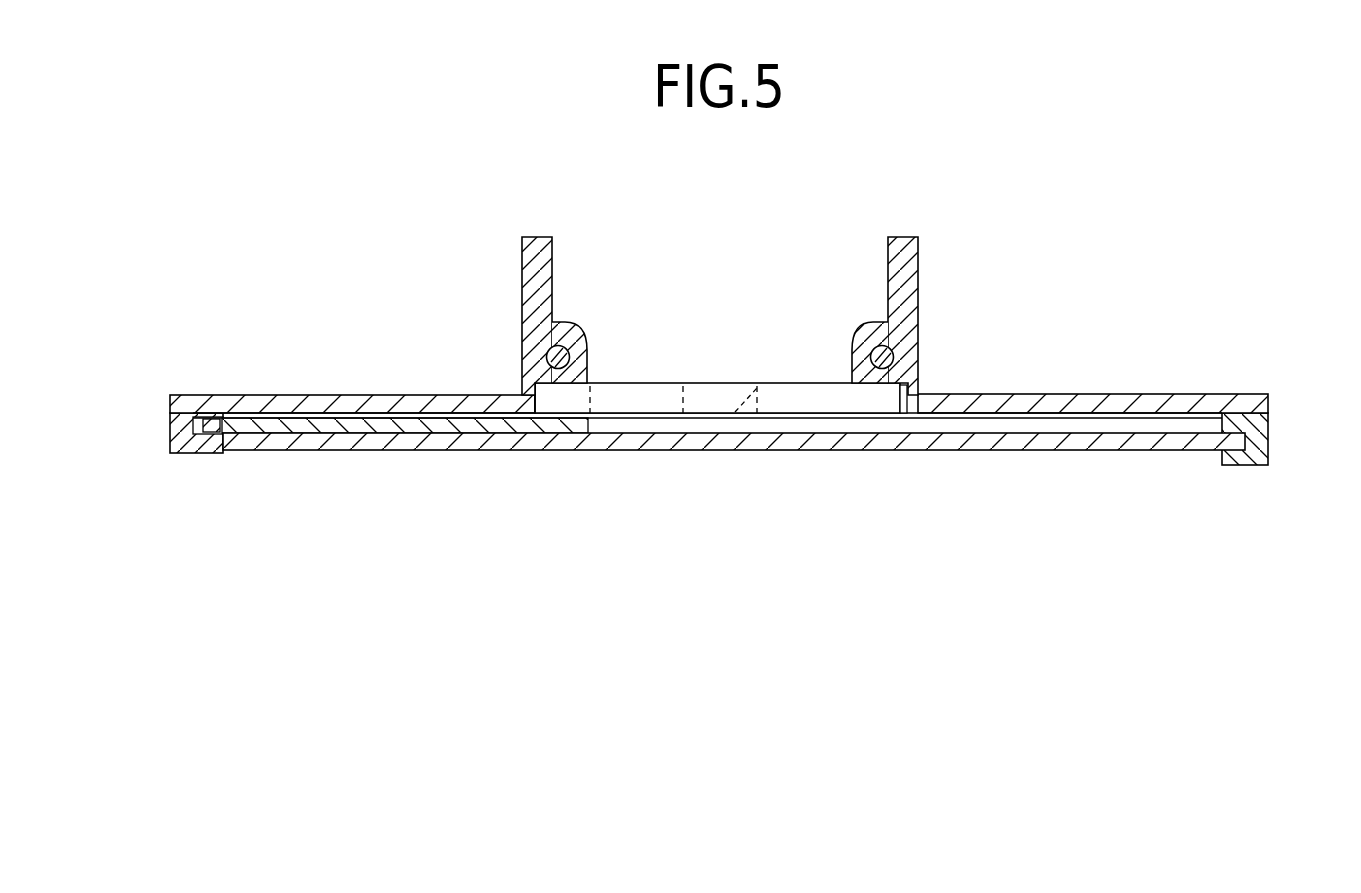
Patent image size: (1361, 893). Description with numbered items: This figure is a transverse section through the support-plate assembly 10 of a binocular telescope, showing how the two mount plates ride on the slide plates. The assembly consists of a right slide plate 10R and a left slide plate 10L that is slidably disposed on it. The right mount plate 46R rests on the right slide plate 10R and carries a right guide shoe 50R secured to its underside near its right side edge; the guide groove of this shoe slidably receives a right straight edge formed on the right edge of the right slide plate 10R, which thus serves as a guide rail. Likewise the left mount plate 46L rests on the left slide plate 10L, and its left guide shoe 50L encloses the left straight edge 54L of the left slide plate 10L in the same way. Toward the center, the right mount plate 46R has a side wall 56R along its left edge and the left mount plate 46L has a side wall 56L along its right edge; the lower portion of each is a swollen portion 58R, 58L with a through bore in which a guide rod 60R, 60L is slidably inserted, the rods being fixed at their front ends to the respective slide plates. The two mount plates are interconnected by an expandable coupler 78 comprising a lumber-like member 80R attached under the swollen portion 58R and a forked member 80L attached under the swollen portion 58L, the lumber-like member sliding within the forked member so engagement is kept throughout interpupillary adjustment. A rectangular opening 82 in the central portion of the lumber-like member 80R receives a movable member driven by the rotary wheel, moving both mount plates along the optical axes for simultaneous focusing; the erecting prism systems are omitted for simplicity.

The support-plate assembly 10 is at (527, 451).
The left slide plate 10L is at (318, 428).
The right slide plate 10R is at (1030, 437).
The left mount plate 46L is at (228, 396).
The right mount plate 46R is at (1123, 394).
The left guide shoe 50L is at (170, 431).
The right guide shoe 50R is at (1266, 428).
The left straight edge 54L is at (212, 442).
The side wall 56L is at (556, 256).
The side wall 56R is at (921, 256).
The swollen portion 58L is at (580, 328).
The swollen portion 58R is at (856, 328).
The guide rod 60L is at (545, 353).
The guide rod 60R is at (895, 362).
The expandable coupler 78 is at (720, 382).
The forked member 80L is at (795, 402).
The lumber-like member 80R is at (902, 417).
The rectangular opening 82 is at (742, 415).